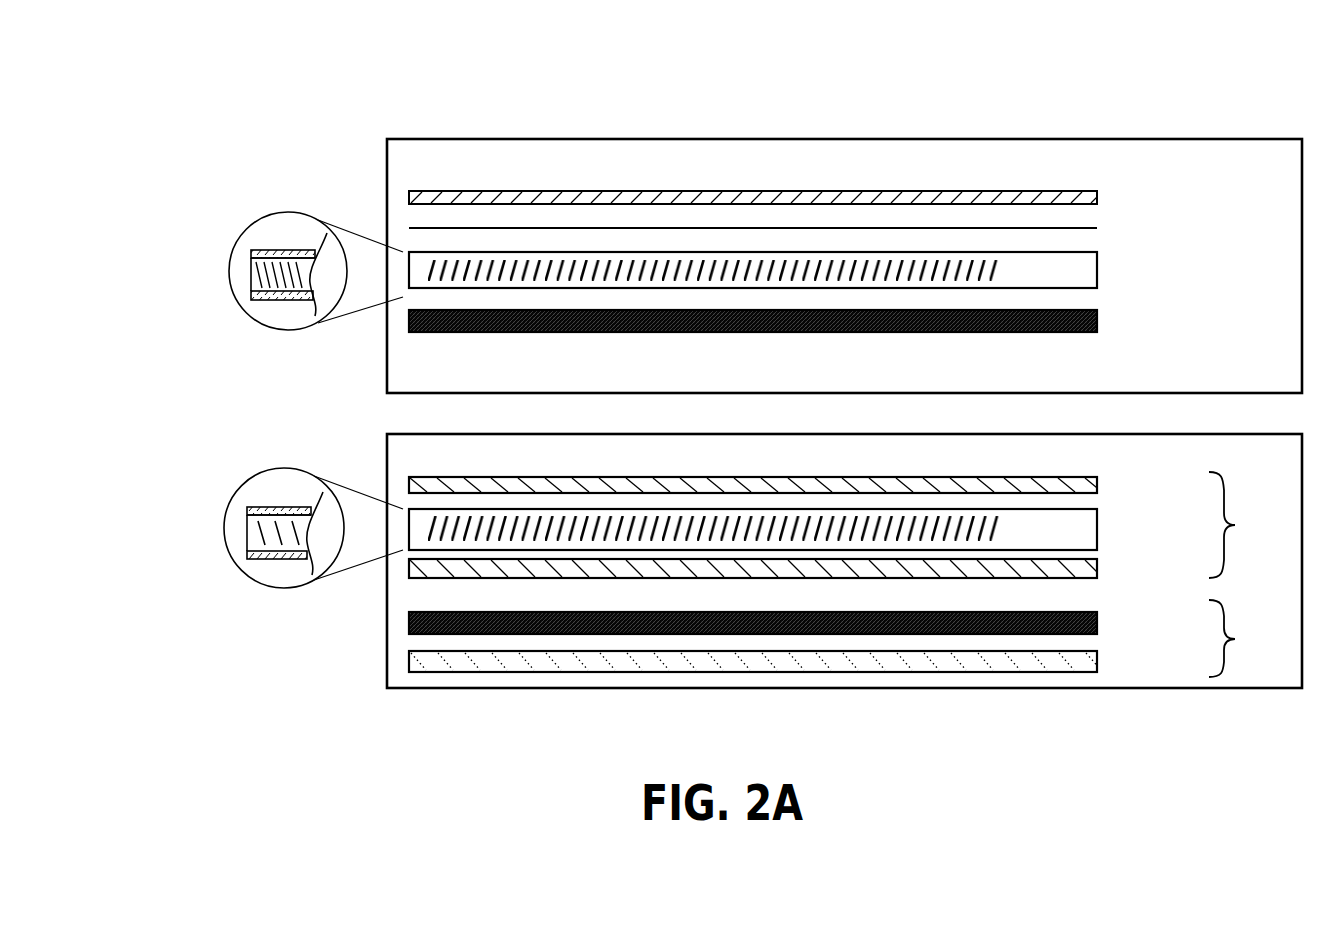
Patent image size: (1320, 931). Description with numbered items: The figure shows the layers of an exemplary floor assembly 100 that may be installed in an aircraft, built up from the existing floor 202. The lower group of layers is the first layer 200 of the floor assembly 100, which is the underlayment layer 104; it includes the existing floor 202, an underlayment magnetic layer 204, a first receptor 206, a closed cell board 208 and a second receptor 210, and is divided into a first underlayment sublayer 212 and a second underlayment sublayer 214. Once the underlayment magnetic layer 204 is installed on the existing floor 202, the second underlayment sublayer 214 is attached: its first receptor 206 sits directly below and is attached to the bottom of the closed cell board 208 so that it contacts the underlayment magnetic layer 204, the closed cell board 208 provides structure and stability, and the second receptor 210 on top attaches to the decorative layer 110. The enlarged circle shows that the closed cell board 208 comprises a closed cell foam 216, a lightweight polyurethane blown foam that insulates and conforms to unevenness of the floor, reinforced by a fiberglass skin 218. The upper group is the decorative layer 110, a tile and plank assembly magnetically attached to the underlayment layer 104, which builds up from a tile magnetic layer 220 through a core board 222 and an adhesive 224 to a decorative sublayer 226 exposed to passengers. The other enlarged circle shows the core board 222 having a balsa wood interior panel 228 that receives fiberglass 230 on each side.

The floor assembly 100 is at (411, 86).
The decorative layer 110 is at (411, 163).
The decorative sublayer 226 is at (1097, 196).
The adhesive 224 is at (1097, 228).
The core board 222 is at (1097, 273).
The tile magnetic layer 220 is at (1097, 316).
The interior panel 228 is at (251, 270).
The fiberglass 230 is at (250, 297).
The first layer 200 is at (356, 650).
The underlayment layer 104 is at (410, 458).
The second underlayment sublayer 214 is at (843, 525).
The second receptor 210 is at (1097, 483).
The closed cell board 208 is at (1097, 530).
The first receptor 206 is at (1097, 565).
The first underlayment sublayer 212 is at (843, 638).
The underlayment magnetic layer 204 is at (1097, 617).
The existing floor 202 is at (1097, 660).
The closed cell foam 216 is at (247, 533).
The fiberglass skin 218 is at (247, 554).